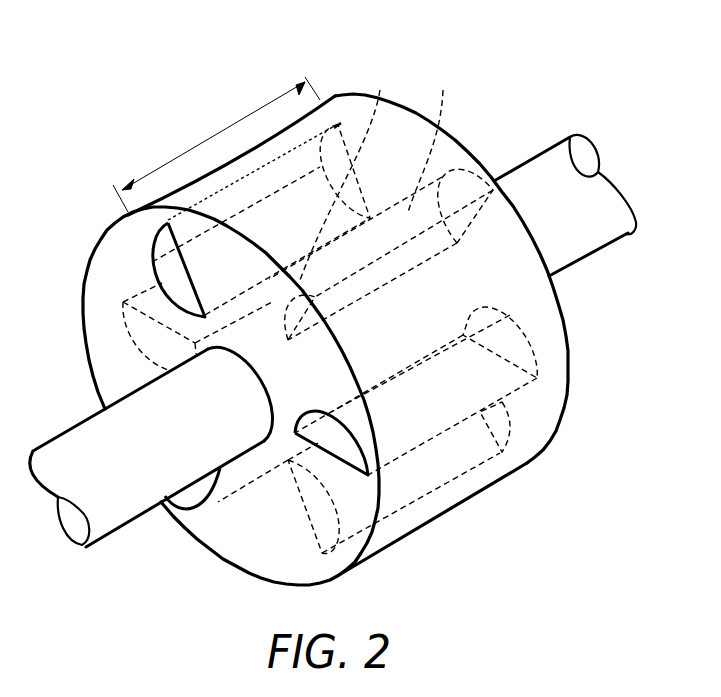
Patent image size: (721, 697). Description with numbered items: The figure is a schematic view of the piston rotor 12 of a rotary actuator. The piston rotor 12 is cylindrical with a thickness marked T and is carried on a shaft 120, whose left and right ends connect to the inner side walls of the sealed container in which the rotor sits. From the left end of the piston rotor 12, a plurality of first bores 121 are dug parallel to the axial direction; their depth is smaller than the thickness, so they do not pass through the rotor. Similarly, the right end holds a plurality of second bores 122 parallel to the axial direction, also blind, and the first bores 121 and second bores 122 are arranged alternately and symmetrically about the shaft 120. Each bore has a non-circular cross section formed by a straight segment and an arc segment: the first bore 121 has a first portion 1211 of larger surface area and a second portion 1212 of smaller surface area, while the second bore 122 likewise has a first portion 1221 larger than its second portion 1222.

The piston rotor 12 is at (333, 96).
The shaft 120 is at (580, 240).
The first bore 121 is at (189, 246).
The first portion 1211 is at (152, 241).
The second portion 1212 is at (193, 290).
The second bore 122 is at (351, 307).
The first portion 1221 is at (352, 170).
The second portion 1222 is at (481, 166).